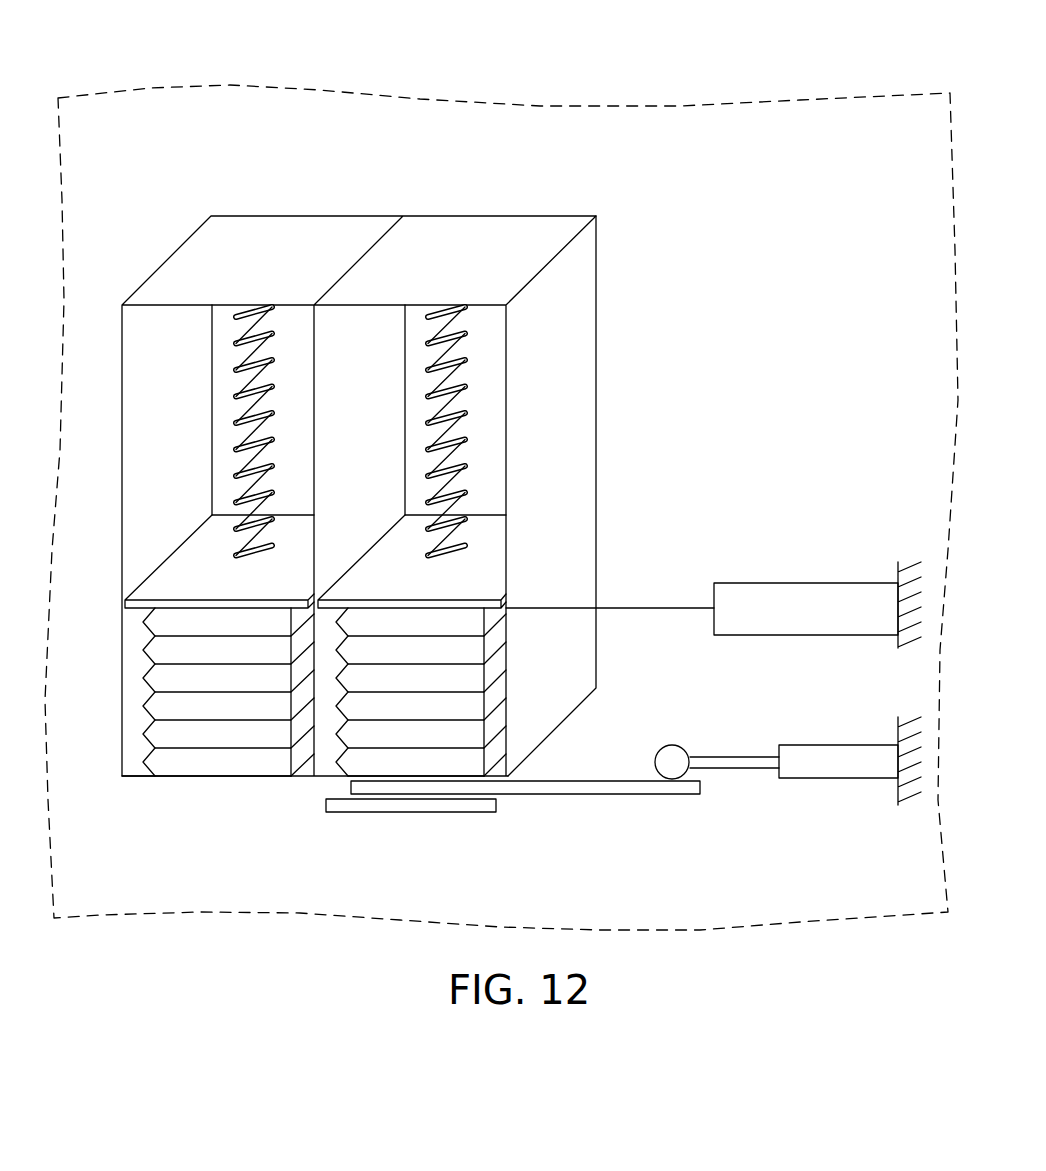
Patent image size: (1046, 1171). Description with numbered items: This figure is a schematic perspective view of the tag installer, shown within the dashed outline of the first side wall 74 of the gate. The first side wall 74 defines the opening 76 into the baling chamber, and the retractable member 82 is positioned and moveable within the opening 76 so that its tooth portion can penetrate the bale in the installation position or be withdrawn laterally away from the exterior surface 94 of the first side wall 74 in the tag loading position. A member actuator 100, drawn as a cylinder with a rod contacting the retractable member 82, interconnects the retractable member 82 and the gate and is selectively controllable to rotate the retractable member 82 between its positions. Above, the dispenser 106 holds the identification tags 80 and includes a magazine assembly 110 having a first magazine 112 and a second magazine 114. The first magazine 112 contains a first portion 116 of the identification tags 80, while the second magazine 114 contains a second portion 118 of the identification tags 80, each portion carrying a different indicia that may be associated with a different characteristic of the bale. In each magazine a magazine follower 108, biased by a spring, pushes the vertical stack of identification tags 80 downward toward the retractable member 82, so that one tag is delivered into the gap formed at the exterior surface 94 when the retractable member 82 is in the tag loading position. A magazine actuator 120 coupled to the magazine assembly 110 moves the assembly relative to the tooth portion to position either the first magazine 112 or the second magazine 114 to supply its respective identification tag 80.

The first side wall 74 is at (668, 106).
The opening 76 is at (360, 807).
The identification tags 80 is at (187, 710).
The retractable member 82 is at (560, 796).
The exterior surface 94 is at (806, 371).
The member actuator 100 is at (823, 757).
The dispenser 106 is at (606, 272).
The magazine follower 108 is at (188, 578).
The magazine assembly 110 is at (563, 395).
The first magazine 112 is at (298, 257).
The second magazine 114 is at (492, 260).
The first portion of the identification tags 116 is at (193, 733).
The second portion of the identification tags 118 is at (432, 740).
The magazine actuator 120 is at (790, 617).